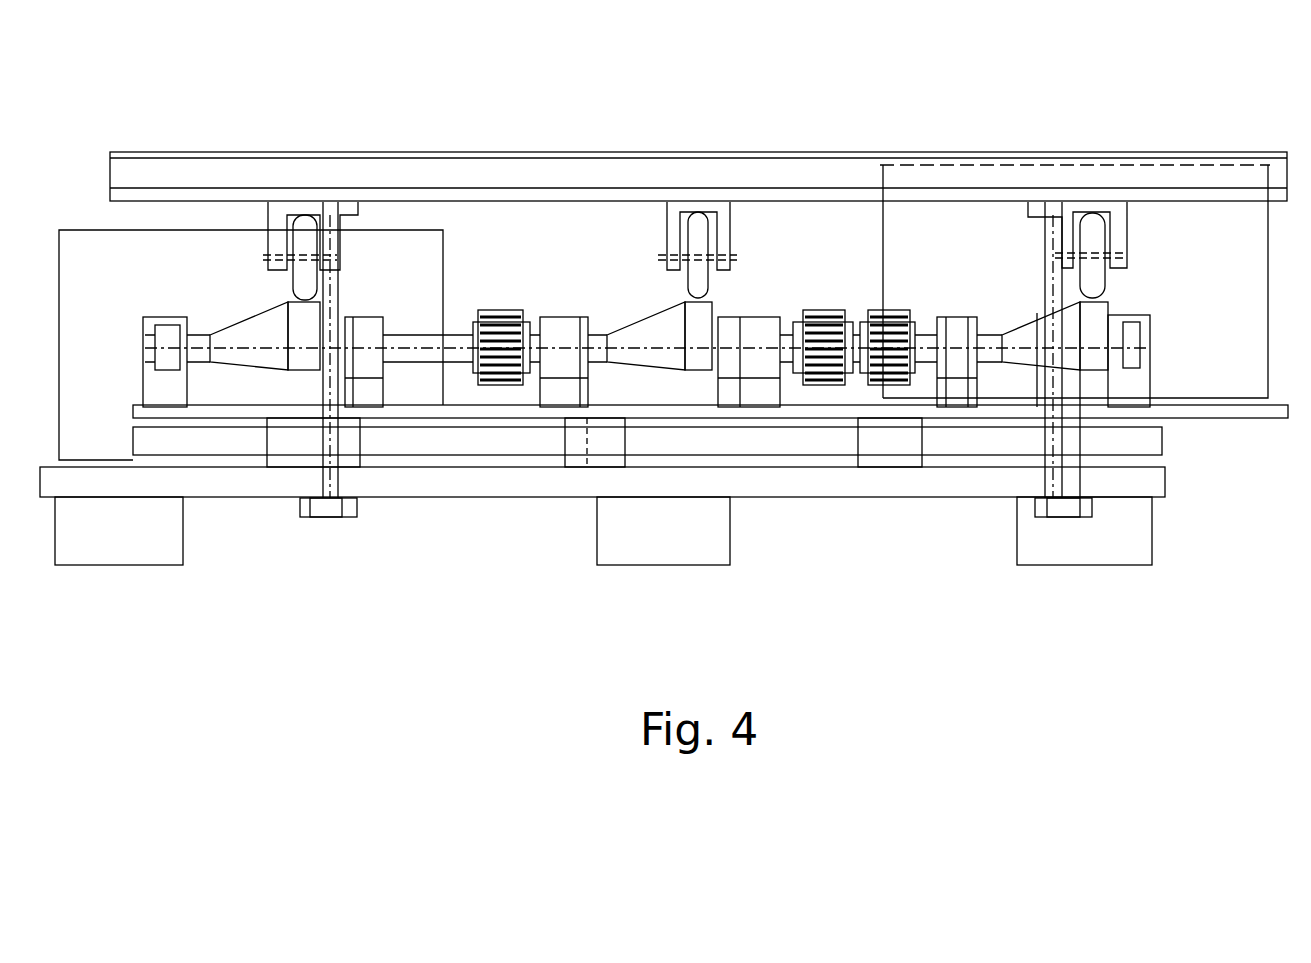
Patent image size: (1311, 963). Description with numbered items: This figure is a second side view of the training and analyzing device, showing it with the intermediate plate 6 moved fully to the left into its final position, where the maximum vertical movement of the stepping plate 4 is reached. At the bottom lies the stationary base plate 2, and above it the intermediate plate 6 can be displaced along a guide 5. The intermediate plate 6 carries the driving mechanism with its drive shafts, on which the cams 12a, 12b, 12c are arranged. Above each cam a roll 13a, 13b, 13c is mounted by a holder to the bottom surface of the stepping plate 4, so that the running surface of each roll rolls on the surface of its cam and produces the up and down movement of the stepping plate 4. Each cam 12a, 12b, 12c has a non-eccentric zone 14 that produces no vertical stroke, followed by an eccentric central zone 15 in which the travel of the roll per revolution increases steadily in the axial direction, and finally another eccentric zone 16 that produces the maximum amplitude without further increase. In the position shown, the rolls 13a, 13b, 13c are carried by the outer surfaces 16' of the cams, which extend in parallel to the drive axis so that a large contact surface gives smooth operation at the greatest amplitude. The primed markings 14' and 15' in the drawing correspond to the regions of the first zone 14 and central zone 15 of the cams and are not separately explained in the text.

The base plate 2 is at (521, 487).
The stepping plate 4 is at (755, 175).
The guide 5 is at (443, 440).
The intermediate plate 6 is at (815, 410).
The cam 12a is at (1035, 350).
The cam 12b is at (656, 355).
The cam 12c is at (265, 352).
The roll 13a is at (1093, 282).
The roll 13b is at (705, 278).
The roll 13c is at (335, 288).
The non-eccentric zone 14 is at (171, 330).
The shaft 14' is at (639, 514).
The eccentric zone 15 is at (259, 219).
The rod 15' is at (305, 456).
The eccentric zone 16 is at (321, 163).
The outer surface 16' is at (355, 559).